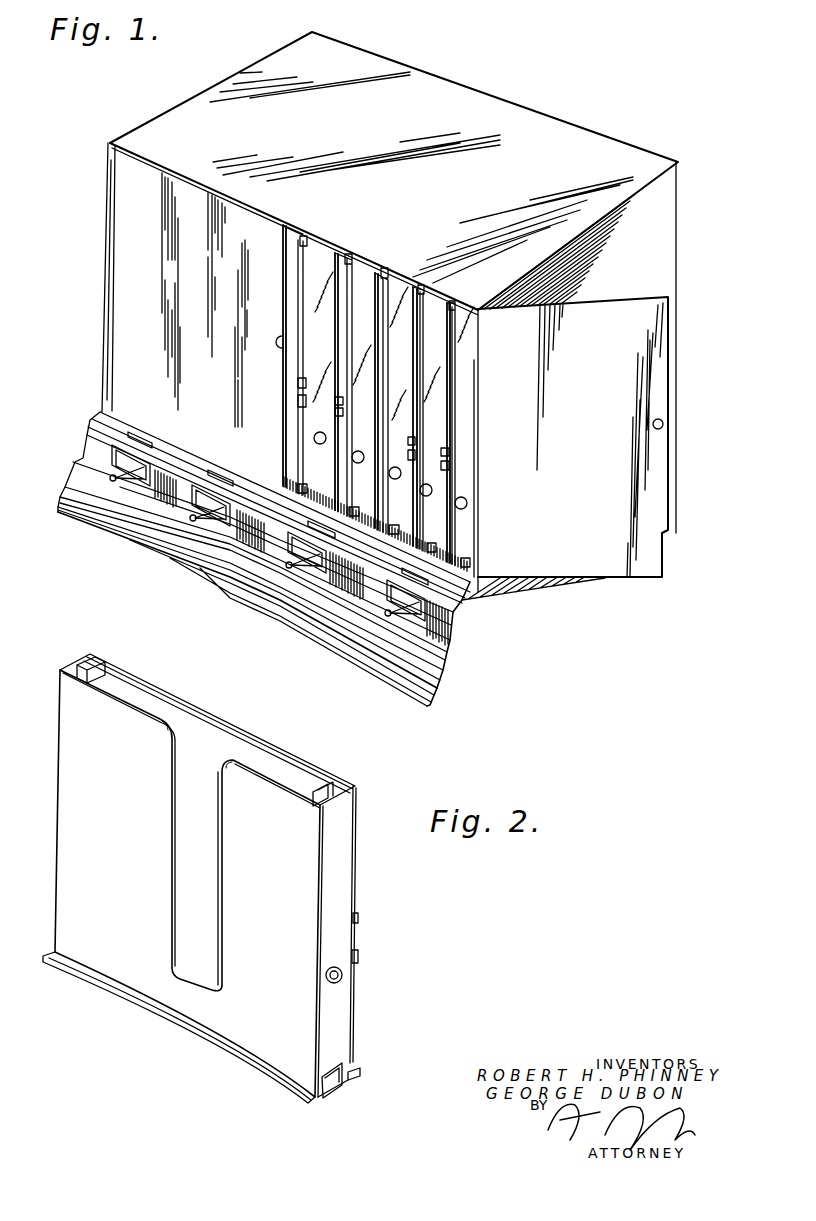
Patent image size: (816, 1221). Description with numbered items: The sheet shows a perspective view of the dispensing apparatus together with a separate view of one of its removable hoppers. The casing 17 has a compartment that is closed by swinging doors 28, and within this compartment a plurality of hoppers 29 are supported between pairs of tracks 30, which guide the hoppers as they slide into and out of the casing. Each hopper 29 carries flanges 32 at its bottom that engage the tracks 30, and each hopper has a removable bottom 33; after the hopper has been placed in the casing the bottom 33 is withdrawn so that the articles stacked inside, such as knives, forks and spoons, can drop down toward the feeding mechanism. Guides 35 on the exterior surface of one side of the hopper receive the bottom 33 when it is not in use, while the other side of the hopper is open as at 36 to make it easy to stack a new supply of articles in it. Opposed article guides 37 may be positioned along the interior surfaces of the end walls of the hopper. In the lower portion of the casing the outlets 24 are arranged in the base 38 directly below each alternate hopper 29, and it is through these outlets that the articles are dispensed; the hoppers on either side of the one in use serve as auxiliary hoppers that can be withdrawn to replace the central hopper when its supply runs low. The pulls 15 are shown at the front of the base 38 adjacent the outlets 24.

In FIG. 1, the tray pull 15 is at (110, 478).
In FIG. 1, the casing 17 is at (653, 255).
In FIG. 1, the outlets 24 is at (140, 460).
In FIG. 1, the swinging doors 28 is at (122, 262).
In FIG. 1, the hoppers 29 is at (430, 303).
In FIG. 2, the hoppers 29 is at (229, 883).
In FIG. 1, the tracks 30 is at (333, 500).
In FIG. 2, the flanges 32 is at (361, 1073).
In FIG. 2, the removable bottom 33 is at (333, 1084).
In FIG. 1, the guides 35 is at (446, 450).
In FIG. 2, the guides 35 is at (360, 955).
In FIG. 2, the open side 36 is at (168, 867).
In FIG. 2, the article guides 37 is at (107, 665).
In FIG. 1, the base 38 is at (473, 653).